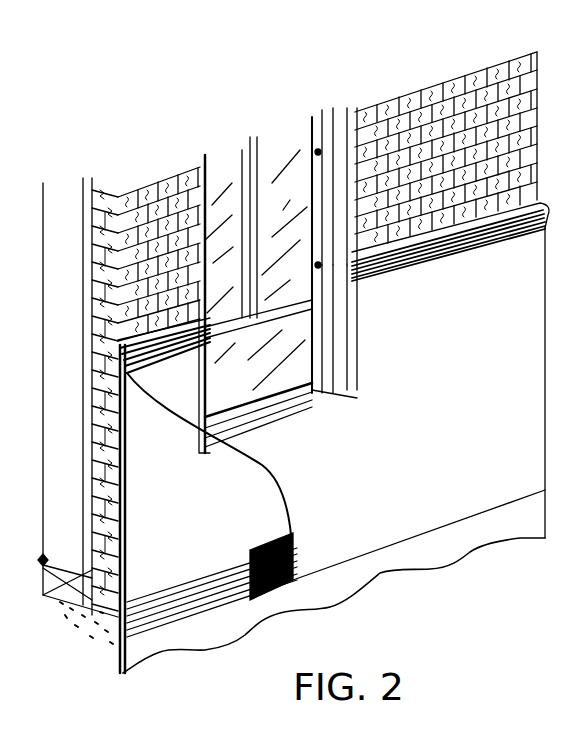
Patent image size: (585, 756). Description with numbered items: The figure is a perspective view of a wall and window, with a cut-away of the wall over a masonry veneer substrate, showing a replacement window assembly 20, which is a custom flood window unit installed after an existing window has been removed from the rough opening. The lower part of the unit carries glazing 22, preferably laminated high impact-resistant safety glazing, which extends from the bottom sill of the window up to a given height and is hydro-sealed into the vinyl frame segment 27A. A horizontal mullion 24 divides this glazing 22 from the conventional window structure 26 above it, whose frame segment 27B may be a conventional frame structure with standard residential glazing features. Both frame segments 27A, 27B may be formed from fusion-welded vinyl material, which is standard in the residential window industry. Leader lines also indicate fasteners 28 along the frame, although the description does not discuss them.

The replacement window assembly 20 is at (205, 135).
The glazing 22 is at (305, 367).
The horizontal mullion 24 is at (303, 312).
The conventional window structure 26 is at (285, 153).
The vinyl frame segment 27A is at (318, 357).
The frame segment 27B is at (330, 200).
The fasteners 28 is at (318, 265).